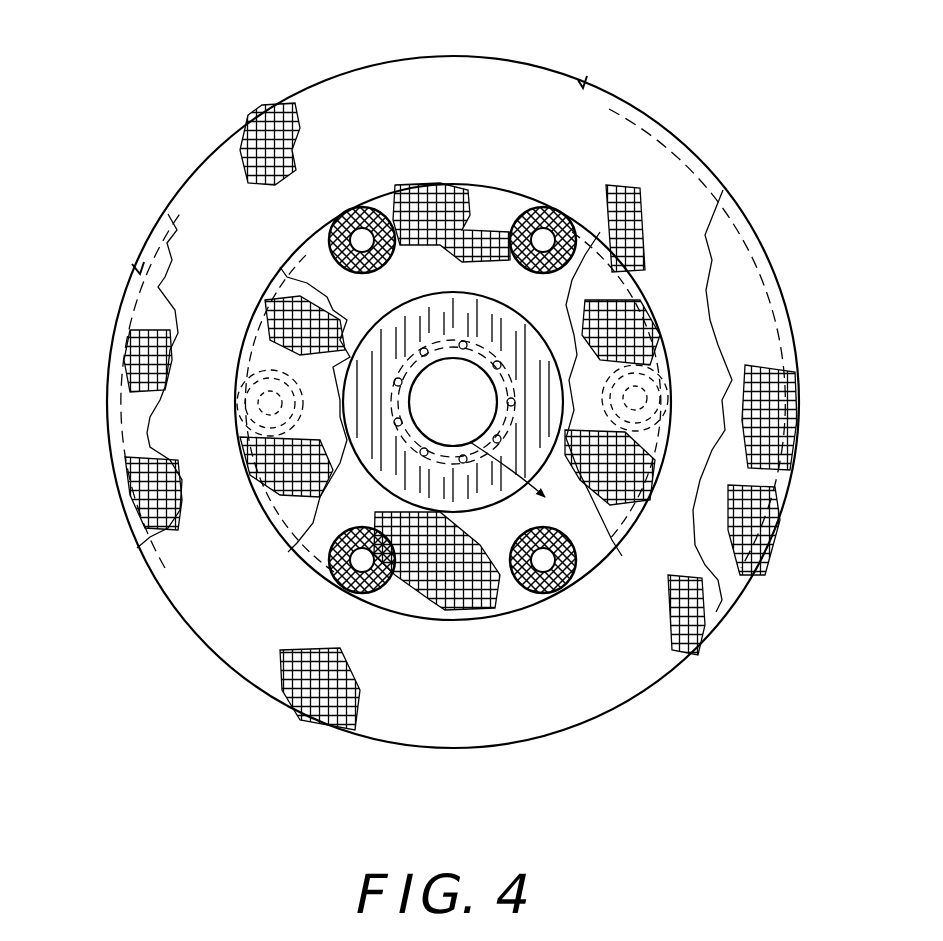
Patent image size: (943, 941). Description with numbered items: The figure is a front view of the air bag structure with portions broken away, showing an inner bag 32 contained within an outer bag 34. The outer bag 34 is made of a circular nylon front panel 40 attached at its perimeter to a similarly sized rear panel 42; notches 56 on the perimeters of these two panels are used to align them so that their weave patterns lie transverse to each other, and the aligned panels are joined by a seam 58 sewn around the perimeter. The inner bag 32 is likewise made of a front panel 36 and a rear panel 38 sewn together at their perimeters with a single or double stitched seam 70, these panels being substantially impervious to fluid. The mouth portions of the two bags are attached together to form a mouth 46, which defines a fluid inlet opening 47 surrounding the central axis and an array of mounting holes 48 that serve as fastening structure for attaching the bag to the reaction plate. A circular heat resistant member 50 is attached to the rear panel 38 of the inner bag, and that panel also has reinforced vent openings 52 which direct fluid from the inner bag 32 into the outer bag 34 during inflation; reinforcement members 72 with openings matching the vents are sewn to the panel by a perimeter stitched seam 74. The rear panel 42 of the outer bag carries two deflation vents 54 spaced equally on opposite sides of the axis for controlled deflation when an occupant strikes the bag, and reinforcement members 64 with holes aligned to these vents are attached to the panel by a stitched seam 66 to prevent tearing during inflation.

The outer bag 34 is at (330, 70).
The notches 56 is at (583, 84).
The inner bag 32 is at (295, 234).
The rear panel 42 is at (198, 206).
The seam 58 is at (748, 238).
The front panel 40 is at (146, 314).
The front panel 36 is at (240, 468).
The seam 70 is at (270, 512).
The rear panel 38 is at (300, 566).
The seam 74 is at (333, 572).
The vent openings 52 is at (362, 592).
The reinforcement members 72 is at (347, 512).
The fluid inlet opening 47 is at (515, 322).
The heat resistant member 50 is at (478, 380).
The mouth 46 is at (478, 410).
The vents 54 is at (565, 455).
The seam 66 is at (567, 460).
The reinforcement members 64 is at (575, 503).
The mounting holes 48 is at (552, 502).